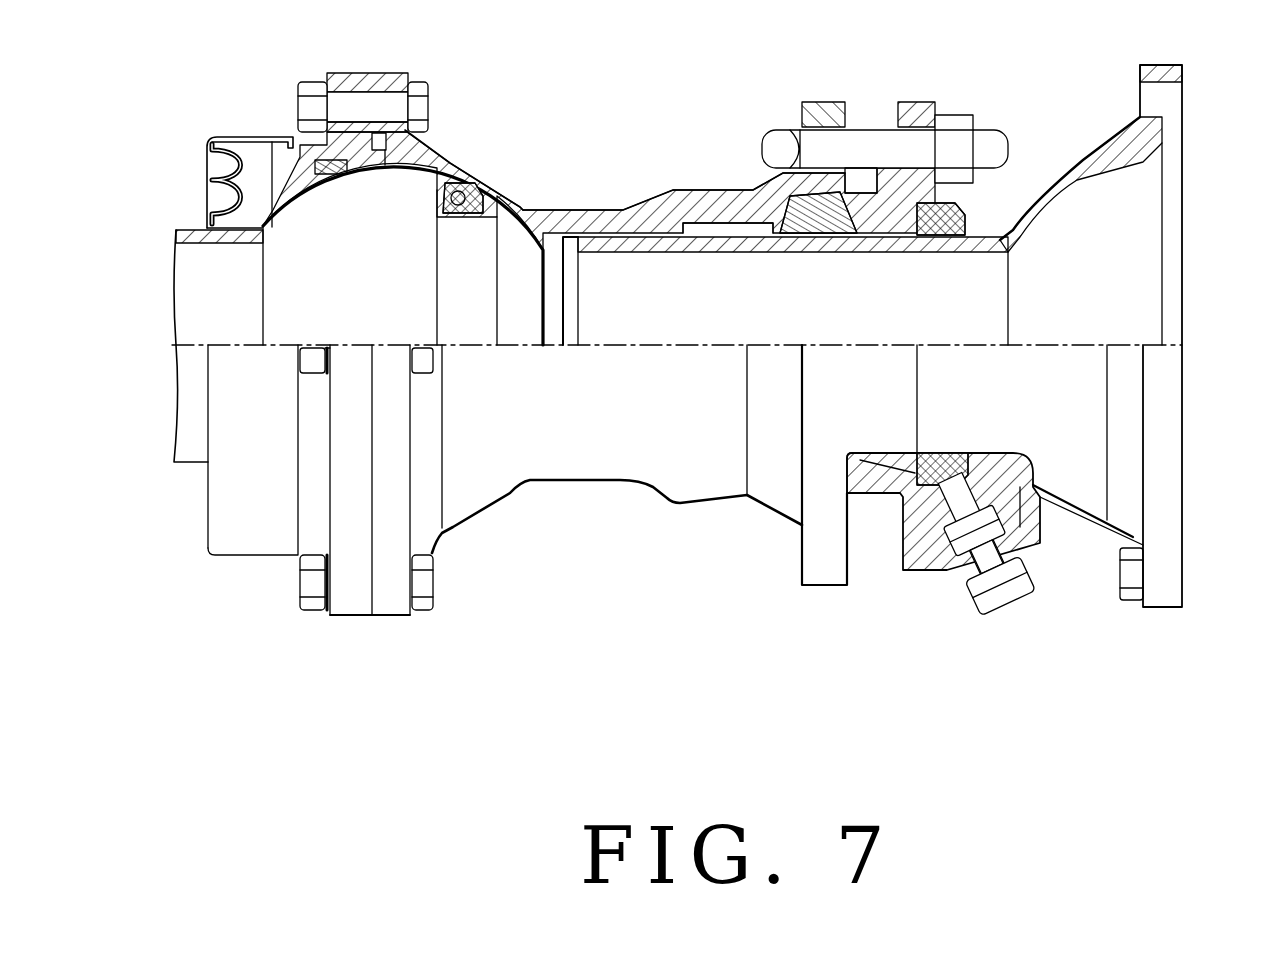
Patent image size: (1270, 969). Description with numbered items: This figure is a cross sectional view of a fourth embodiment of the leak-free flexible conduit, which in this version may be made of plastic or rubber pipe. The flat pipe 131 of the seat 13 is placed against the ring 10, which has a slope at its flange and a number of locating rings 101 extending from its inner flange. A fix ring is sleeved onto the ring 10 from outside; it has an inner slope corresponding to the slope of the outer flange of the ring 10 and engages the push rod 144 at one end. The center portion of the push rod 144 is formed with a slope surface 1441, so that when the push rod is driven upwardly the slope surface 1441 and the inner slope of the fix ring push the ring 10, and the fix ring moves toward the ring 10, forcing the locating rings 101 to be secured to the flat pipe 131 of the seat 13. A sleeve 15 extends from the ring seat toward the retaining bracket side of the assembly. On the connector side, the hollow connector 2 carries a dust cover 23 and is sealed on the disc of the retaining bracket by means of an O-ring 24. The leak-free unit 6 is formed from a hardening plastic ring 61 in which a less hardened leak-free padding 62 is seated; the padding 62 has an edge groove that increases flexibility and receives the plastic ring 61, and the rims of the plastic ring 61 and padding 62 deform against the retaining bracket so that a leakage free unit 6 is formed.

The connector 2 is at (353, 87).
The leak-free unit 6 is at (479, 118).
The ring 10 is at (1041, 507).
The seat 13 is at (1170, 128).
The sleeve 15 is at (715, 207).
The dust cover 23 is at (243, 152).
The O-ring 24 is at (388, 165).
The plastic ring 61 is at (472, 207).
The leak-free padding 62 is at (450, 192).
The locating ring 101 is at (900, 503).
The flat pipe 131 is at (982, 243).
The slope block 144 is at (1038, 497).
The slope surface 1441 is at (1008, 465).